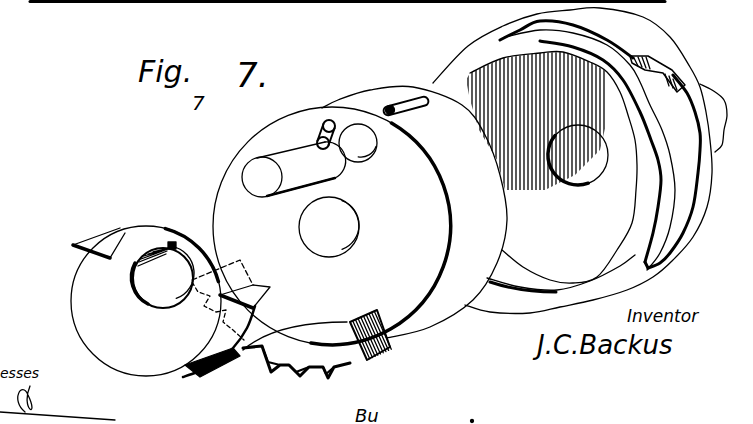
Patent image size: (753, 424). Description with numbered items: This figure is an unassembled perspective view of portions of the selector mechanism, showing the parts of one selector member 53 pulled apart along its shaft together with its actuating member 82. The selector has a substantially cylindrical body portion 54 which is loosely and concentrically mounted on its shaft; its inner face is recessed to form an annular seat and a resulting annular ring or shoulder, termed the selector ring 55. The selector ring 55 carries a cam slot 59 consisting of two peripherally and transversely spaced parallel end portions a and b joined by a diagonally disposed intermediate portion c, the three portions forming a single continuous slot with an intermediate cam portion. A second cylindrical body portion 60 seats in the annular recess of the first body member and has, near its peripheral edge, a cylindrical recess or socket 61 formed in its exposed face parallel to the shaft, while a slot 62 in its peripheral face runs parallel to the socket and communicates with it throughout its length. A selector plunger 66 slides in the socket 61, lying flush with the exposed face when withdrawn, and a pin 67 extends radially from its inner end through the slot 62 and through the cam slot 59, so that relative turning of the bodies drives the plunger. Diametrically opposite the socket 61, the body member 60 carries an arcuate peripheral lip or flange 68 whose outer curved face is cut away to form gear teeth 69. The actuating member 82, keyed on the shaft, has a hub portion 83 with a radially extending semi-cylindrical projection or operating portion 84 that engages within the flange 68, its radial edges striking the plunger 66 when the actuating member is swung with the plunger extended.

The selector member 53 is at (668, 279).
The body portion 54 is at (552, 156).
The selector ring 55 is at (618, 42).
The cam slot 59 is at (678, 236).
The second cylindrical body portion 60 is at (332, 226).
The cylindrical recess or socket 61 is at (365, 159).
The slot 62 is at (395, 104).
The selector plunger 66 is at (310, 130).
The pin 67 is at (328, 120).
The arcuate peripheral lip or flange 68 is at (330, 342).
The gear teeth 69 is at (300, 374).
The actuating member 82 is at (165, 228).
The hub portion 83 is at (140, 219).
The semi-cylindrical projection or operating portion 84 is at (82, 317).
The end portion of cam slot a is at (587, 37).
The end portion of cam slot b is at (656, 250).
The intermediate portion of cam slot c is at (651, 70).